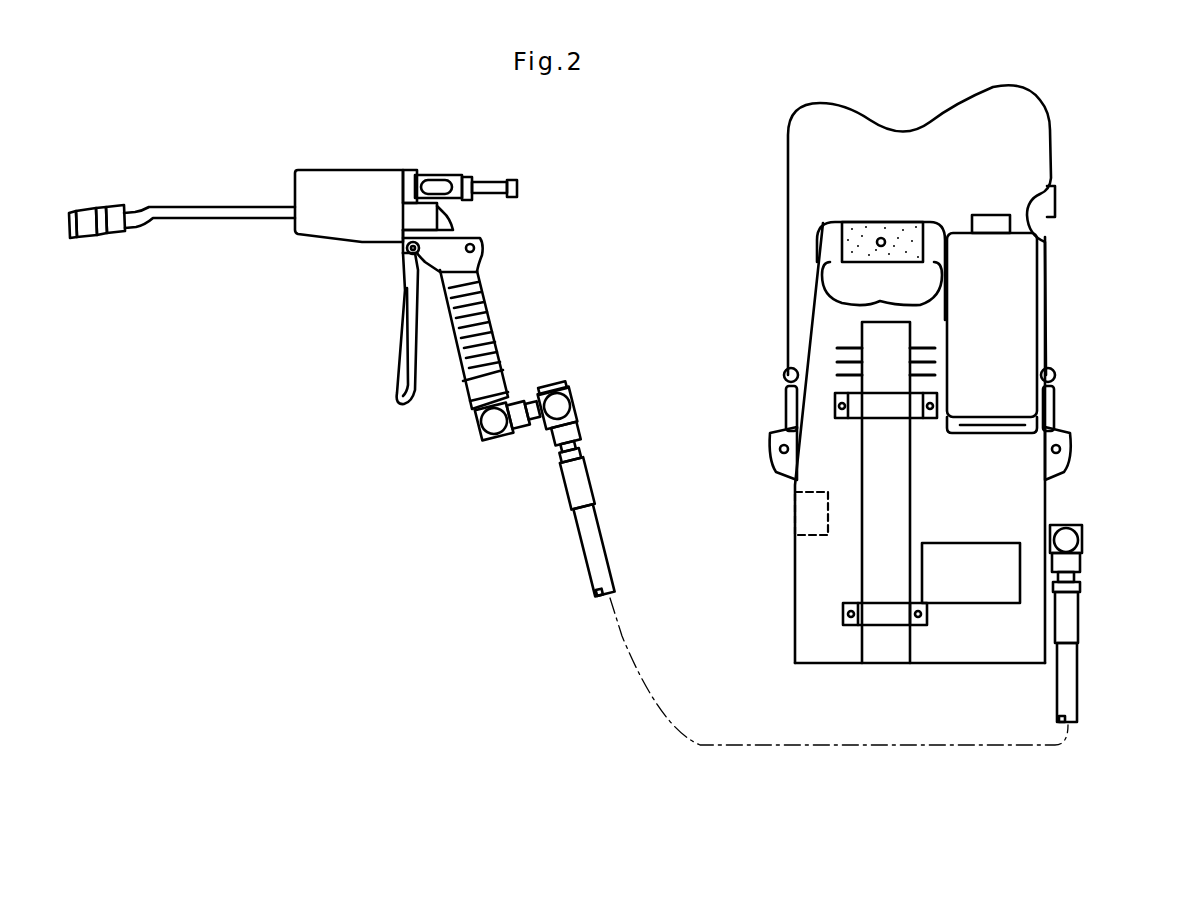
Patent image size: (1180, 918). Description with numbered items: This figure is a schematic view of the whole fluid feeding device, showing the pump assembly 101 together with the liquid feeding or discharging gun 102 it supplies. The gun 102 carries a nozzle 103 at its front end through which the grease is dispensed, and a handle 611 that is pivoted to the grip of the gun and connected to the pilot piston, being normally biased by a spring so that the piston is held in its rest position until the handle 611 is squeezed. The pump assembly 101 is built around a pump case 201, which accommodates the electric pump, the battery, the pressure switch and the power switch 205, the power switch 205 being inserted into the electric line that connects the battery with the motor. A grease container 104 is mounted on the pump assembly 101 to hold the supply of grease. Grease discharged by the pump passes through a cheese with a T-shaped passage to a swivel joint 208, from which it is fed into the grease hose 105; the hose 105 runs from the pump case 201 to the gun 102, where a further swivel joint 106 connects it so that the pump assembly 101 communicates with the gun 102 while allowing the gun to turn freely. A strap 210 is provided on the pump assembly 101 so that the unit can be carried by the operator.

The pump assembly 101 is at (818, 218).
The liquid feeding or discharging gun 102 is at (343, 184).
The nozzle 103 is at (75, 210).
The grease container 104 is at (1012, 320).
The grease hose 105 is at (593, 548).
The swivel joint 106 is at (565, 403).
The pump case 201 is at (795, 585).
The power switch 205 is at (808, 513).
The swivel joint 208 is at (1068, 564).
The strap 210 is at (1053, 130).
The handle 611 is at (403, 340).